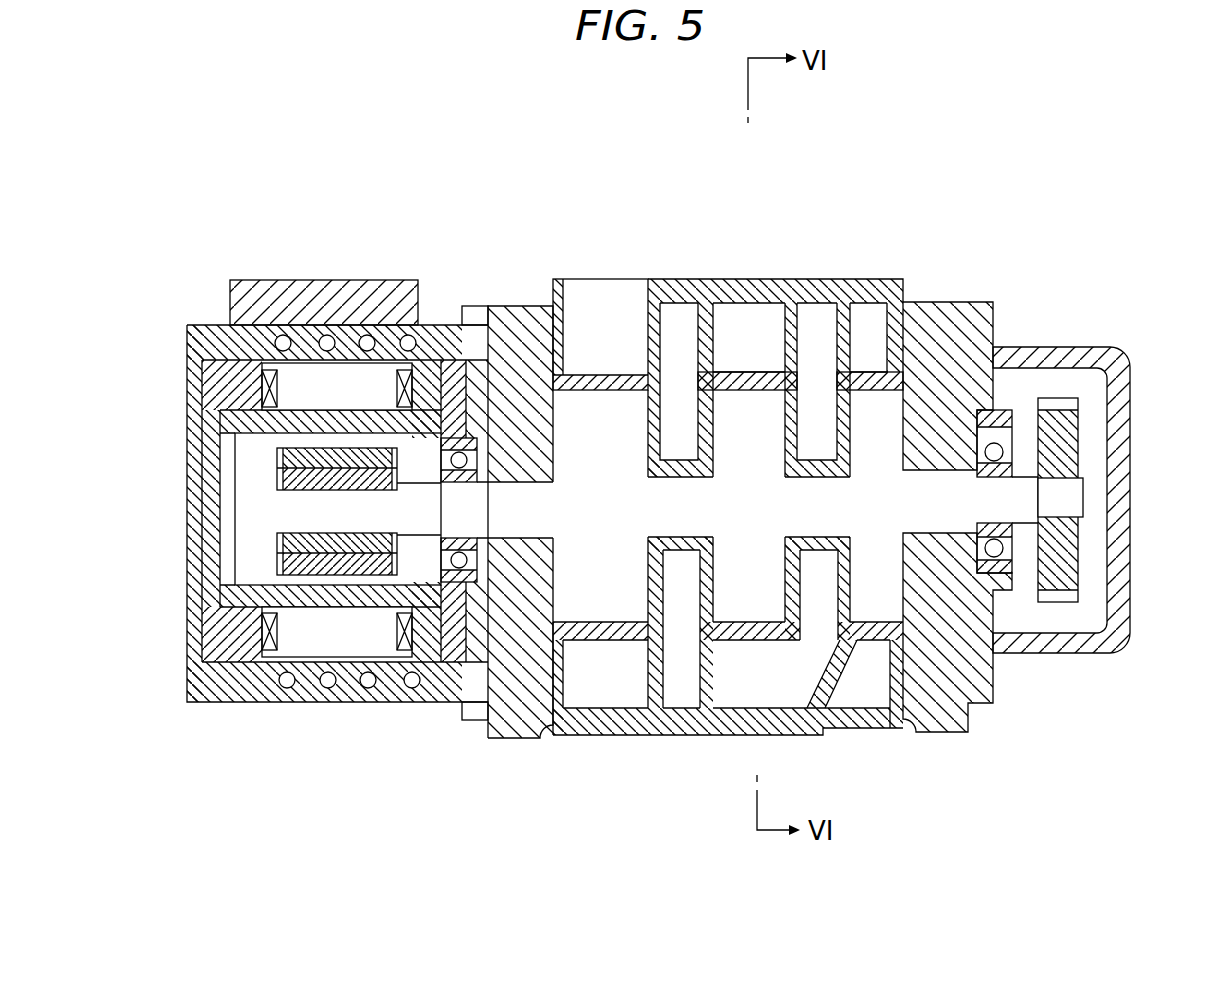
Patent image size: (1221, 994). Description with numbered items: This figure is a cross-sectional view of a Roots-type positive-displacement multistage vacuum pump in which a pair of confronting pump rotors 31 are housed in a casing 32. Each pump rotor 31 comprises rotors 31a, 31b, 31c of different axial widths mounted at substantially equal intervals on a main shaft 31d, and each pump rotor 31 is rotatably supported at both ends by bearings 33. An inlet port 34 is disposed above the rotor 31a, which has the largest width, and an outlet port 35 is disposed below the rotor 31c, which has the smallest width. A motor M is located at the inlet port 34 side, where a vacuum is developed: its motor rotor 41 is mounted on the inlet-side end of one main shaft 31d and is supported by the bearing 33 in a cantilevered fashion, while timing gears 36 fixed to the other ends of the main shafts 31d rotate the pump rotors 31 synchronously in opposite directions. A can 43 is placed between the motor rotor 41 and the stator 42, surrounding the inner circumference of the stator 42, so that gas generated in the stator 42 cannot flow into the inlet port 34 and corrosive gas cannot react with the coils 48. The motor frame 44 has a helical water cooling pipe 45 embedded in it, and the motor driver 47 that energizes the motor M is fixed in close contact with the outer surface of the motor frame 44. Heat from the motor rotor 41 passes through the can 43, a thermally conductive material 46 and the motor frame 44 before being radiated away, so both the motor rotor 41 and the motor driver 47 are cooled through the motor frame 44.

The motor M is at (333, 250).
The pump rotor 31 is at (913, 183).
The rotor 31a is at (615, 410).
The rotor 31b is at (750, 405).
The rotor 31c is at (870, 393).
The main shaft 31d is at (677, 488).
The casing 32 is at (772, 380).
The bearing 33 is at (453, 433).
The inlet port 34 is at (595, 290).
The outlet port 35 is at (862, 730).
The timing gear 36 is at (1055, 410).
The motor rotor 41 is at (255, 461).
The stator 42 is at (383, 367).
The can 43 is at (202, 362).
The motor frame 44 is at (247, 412).
The helical water cooling pipe 45 is at (367, 347).
The thermally conductive material 46 is at (212, 638).
The motor driver 47 is at (300, 293).
The coil 48 is at (272, 652).